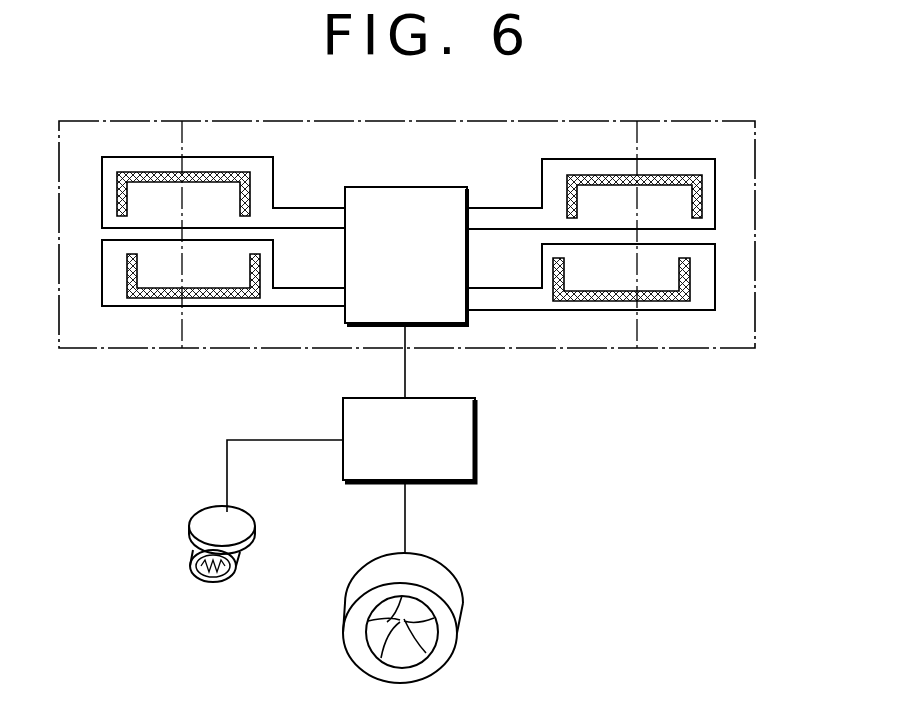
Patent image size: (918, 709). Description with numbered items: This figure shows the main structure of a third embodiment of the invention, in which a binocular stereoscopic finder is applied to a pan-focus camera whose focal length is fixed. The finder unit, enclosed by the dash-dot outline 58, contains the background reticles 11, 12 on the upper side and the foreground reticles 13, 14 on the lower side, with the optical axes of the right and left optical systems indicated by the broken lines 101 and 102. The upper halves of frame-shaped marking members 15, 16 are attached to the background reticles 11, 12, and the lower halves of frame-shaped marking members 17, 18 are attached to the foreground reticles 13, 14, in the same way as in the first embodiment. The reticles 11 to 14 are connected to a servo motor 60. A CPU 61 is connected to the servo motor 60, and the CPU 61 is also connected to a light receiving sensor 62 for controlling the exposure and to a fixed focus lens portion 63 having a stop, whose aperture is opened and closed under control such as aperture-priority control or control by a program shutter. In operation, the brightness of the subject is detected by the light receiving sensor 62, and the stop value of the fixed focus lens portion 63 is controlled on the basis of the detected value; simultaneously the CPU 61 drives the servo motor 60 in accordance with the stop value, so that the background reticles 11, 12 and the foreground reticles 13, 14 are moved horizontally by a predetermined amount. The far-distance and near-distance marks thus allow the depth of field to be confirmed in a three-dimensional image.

The background reticle 11 is at (252, 157).
The background reticle 12 is at (713, 140).
The foreground reticle 13 is at (276, 306).
The foreground reticle 14 is at (705, 312).
The frame-shaped marking member 15 is at (205, 172).
The frame-shaped marking member 16 is at (583, 175).
The frame-shaped marking member 17 is at (135, 303).
The frame-shaped marking member 18 is at (585, 300).
The linear motor unit 58 is at (705, 121).
The servo motor 60 is at (413, 186).
The CPU 61 is at (477, 440).
The light receiving sensor 62 is at (190, 538).
The fixed focus lens portion 63 is at (463, 605).
The optical axis 101 is at (183, 310).
The optical axis 102 is at (637, 315).